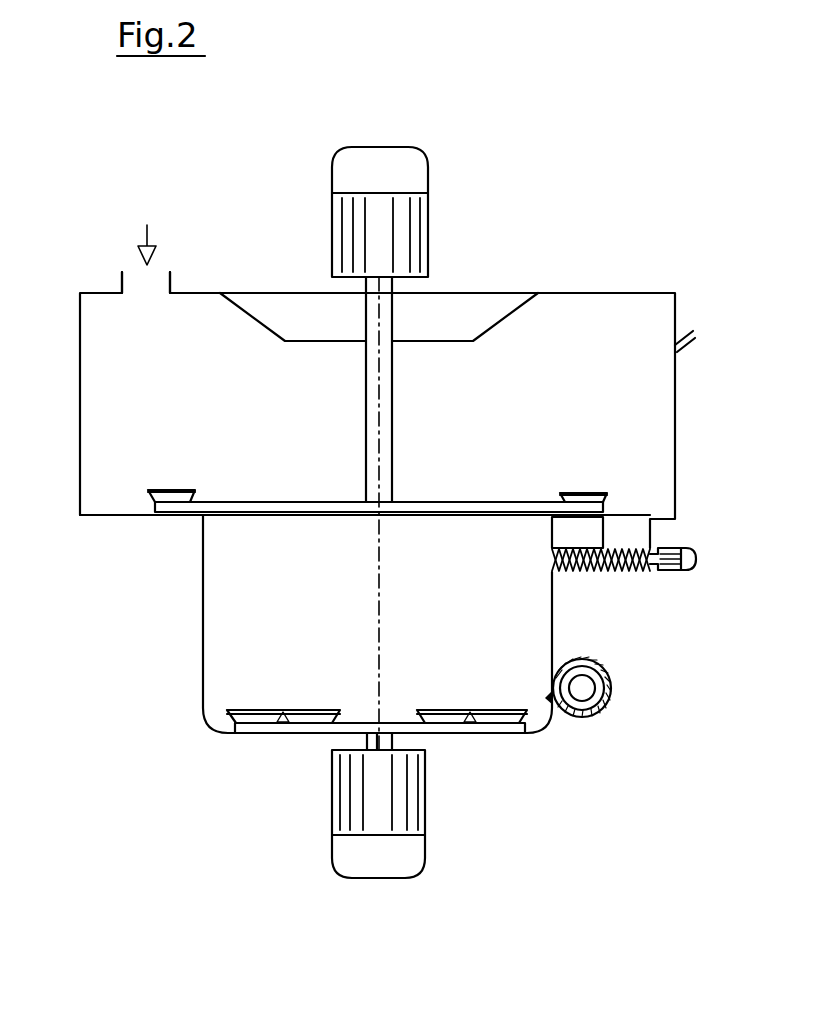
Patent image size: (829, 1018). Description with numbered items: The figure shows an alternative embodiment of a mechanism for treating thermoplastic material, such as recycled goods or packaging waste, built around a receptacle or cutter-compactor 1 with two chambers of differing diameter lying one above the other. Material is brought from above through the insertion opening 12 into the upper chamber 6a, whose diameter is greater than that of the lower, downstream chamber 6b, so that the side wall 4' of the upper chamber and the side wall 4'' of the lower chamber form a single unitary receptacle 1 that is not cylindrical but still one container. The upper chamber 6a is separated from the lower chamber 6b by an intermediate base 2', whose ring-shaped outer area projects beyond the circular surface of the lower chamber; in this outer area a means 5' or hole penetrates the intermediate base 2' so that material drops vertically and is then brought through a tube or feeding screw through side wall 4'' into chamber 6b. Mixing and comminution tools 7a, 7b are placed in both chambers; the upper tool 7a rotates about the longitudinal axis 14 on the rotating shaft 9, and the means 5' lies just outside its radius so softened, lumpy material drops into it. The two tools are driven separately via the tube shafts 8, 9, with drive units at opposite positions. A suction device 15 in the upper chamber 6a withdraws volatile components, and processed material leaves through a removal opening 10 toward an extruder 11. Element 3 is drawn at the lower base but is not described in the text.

The receptacle or cutter-compactor 1 is at (584, 243).
The intermediate base 2' is at (402, 531).
The lower sieve plate 3 is at (266, 735).
The side wall of upper chamber 4' is at (351, 410).
The side wall of lower chamber 4'' is at (354, 624).
The means or hole 5' is at (624, 522).
The upper chamber 6a is at (377, 402).
The lower chamber 6b is at (377, 612).
The mixing and comminution tool 7a is at (417, 502).
The mixing and comminution tool 7b is at (401, 721).
The tube shaft 8 is at (386, 740).
The rotating shaft 9 is at (389, 440).
The removal opening 10 is at (548, 700).
The extruder 11 is at (600, 704).
The insertion opening 12 is at (120, 268).
The longitudinal axis 14 is at (381, 398).
The suction device 15 is at (697, 336).